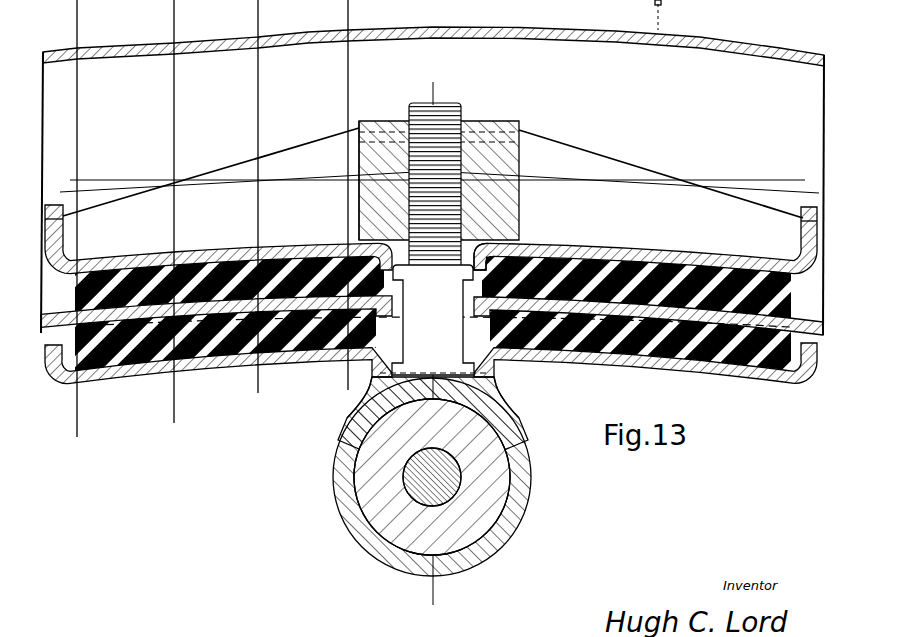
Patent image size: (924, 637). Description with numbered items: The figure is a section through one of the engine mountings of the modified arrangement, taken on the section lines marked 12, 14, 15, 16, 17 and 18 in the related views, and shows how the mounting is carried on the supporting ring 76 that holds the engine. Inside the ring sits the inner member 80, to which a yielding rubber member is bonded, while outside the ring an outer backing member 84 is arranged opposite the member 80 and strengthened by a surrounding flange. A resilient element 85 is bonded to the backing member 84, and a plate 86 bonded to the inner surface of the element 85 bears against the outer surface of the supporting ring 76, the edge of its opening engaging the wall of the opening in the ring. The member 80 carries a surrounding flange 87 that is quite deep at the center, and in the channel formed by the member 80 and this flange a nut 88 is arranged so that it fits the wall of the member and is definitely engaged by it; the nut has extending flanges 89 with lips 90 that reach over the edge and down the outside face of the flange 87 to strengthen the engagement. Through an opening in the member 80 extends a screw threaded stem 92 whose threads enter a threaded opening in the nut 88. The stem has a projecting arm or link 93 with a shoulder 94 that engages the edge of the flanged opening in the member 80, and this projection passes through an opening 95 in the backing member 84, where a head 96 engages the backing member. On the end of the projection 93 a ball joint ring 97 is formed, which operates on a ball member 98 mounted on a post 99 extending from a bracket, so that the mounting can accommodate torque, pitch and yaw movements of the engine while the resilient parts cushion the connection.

The section line 12- 12 is at (438, 180).
The section line 14-14 / axis 14 is at (436, 344).
The section line 15 is at (330, 372).
The section line 16 is at (247, 388).
The section line 17 is at (155, 415).
The section line 18 is at (58, 427).
The ring 76 is at (561, 33).
The member 80 is at (127, 262).
The outer backing member 84 is at (242, 368).
The resilient element 85 is at (186, 356).
The plate 86 is at (133, 369).
The surrounding flange 87 is at (229, 172).
The nut 88 is at (498, 130).
The extending flanges 89 is at (385, 121).
The lips 90 is at (359, 131).
The screw threaded projection or stem 92 is at (452, 137).
The projecting arm or link 93 is at (412, 337).
The shoulder 94 is at (500, 246).
The opening 95 is at (372, 381).
The head 96 is at (497, 381).
The ball joint ring 97 is at (481, 563).
The ball member 98 is at (500, 465).
The post 99 is at (446, 483).